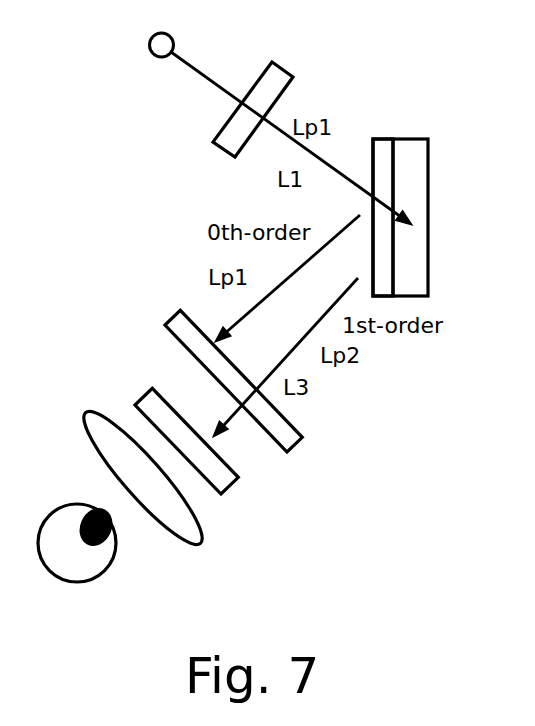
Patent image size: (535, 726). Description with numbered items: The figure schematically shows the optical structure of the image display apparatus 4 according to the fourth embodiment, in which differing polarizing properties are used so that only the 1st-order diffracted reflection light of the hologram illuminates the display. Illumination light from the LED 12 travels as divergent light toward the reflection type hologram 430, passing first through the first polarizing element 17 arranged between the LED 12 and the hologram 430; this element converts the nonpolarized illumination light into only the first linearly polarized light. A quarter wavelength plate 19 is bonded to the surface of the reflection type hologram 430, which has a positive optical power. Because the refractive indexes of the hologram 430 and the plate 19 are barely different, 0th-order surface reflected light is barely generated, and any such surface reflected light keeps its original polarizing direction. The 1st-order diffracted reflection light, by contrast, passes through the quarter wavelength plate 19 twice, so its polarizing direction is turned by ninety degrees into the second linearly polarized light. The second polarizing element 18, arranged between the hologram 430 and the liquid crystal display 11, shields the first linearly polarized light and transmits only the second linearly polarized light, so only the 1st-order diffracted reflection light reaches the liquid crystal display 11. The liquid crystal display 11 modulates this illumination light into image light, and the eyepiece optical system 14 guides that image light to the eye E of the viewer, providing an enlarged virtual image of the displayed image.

The LED 12 is at (149, 46).
The first polarizing element 17 is at (279, 70).
The ¼ wavelength plate 19 is at (378, 143).
The reflection type hologram 430 is at (411, 140).
The second polarizing element 18 is at (294, 446).
The liquid crystal display 11 is at (218, 476).
The eyepiece optical system 14 is at (185, 530).
The eye E is at (68, 566).
The image display apparatus 4 is at (425, 387).